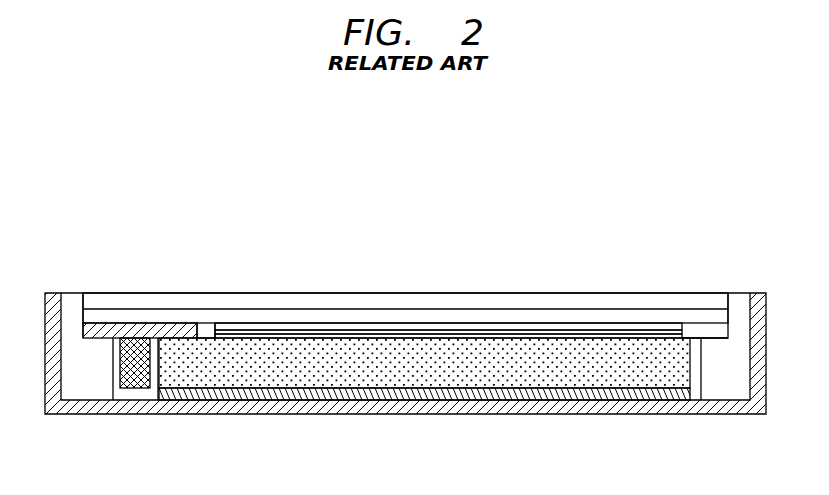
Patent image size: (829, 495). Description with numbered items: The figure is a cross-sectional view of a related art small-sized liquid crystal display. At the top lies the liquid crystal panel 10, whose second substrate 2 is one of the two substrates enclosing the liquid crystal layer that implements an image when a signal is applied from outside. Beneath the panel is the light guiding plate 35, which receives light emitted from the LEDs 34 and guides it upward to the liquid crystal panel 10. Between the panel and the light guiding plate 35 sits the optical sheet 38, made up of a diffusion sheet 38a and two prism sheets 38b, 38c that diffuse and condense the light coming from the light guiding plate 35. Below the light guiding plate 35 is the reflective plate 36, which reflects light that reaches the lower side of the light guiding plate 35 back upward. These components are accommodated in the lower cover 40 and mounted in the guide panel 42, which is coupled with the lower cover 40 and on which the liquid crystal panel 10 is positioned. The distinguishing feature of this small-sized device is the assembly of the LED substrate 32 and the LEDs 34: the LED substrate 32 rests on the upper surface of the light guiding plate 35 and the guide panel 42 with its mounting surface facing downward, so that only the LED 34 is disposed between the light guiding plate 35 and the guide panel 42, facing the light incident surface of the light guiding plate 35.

The liquid crystal panel 10 is at (285, 291).
The second substrate 2 is at (234, 316).
The LED substrate 32 is at (143, 331).
The LED 34 is at (137, 385).
The light guiding plate 35 is at (433, 370).
The reflective plate 36 is at (385, 393).
The optical sheet 38 is at (471, 267).
The diffusion sheet 38a is at (435, 326).
The prism sheet 38b is at (473, 333).
The prism sheet 38c is at (415, 232).
The lower cover 40 is at (337, 408).
The guide panel 42 is at (77, 390).